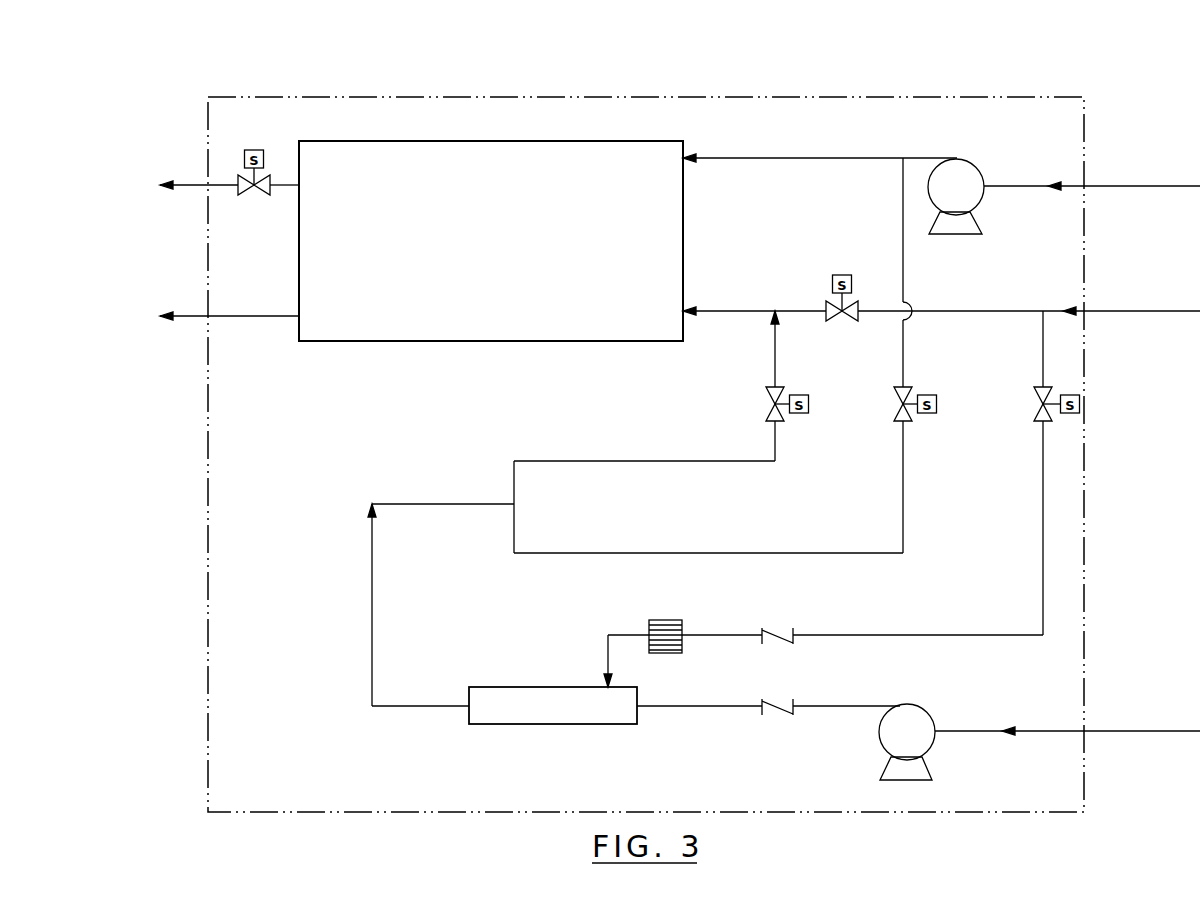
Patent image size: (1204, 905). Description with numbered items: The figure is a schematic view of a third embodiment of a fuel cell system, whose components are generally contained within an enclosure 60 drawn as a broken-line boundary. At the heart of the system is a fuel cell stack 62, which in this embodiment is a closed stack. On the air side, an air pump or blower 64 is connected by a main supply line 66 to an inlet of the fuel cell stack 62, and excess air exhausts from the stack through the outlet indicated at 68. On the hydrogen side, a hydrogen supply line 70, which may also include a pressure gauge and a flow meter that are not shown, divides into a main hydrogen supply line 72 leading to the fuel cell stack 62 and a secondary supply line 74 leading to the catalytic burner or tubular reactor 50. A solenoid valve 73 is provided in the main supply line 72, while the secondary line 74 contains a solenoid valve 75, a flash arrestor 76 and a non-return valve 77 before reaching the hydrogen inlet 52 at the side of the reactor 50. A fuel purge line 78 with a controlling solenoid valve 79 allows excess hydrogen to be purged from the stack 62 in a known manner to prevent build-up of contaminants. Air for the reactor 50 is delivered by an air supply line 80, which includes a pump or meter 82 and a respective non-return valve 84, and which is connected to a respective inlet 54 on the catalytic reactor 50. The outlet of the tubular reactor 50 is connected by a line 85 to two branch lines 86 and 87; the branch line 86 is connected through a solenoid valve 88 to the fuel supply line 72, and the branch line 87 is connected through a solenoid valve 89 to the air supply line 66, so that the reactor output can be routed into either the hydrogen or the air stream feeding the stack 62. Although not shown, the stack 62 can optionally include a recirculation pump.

The catalytic reactor 50 is at (487, 724).
The hydrogen inlet 52 is at (608, 642).
The inlet 54 is at (690, 706).
The enclosure 60 is at (530, 97).
The fuel cell stack 62 is at (388, 341).
The air pump or blower 64 is at (973, 171).
The main supply line 66 is at (803, 158).
The excess air exhaust 68 is at (262, 316).
The hydrogen supply line 70 is at (1150, 311).
The main hydrogen supply line 72 is at (725, 311).
The solenoid valve 73 is at (843, 275).
The secondary supply line 74 is at (1043, 497).
The solenoid valve 75 is at (1078, 415).
The flash arrestor 76 is at (660, 620).
The non-return valve 77 is at (781, 628).
The fuel purge line 78 is at (225, 185).
The solenoid valve 79 is at (254, 150).
The air supply line 80 is at (858, 706).
The pump or meter 82 is at (926, 717).
The non-return valve 84 is at (780, 712).
The line 85 is at (372, 621).
The branch line 86 is at (748, 462).
The branch line 87 is at (637, 553).
The solenoid valve 88 is at (800, 413).
The solenoid valve 89 is at (925, 413).